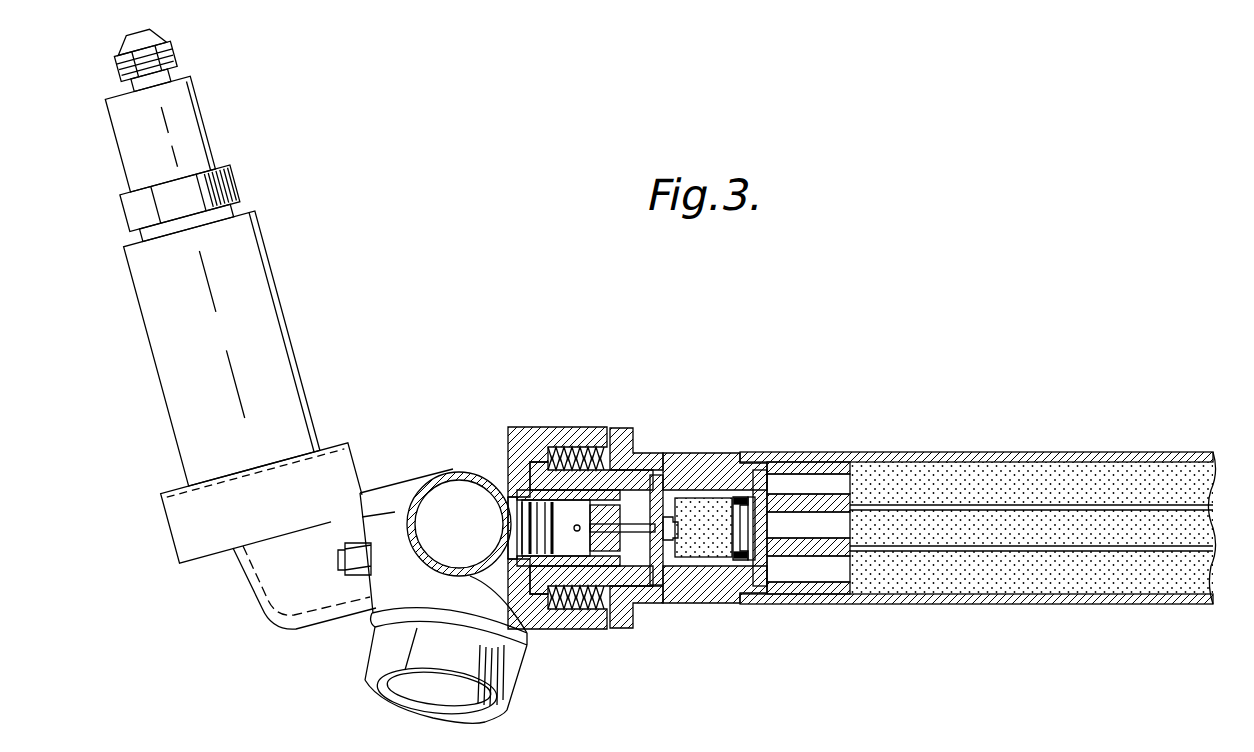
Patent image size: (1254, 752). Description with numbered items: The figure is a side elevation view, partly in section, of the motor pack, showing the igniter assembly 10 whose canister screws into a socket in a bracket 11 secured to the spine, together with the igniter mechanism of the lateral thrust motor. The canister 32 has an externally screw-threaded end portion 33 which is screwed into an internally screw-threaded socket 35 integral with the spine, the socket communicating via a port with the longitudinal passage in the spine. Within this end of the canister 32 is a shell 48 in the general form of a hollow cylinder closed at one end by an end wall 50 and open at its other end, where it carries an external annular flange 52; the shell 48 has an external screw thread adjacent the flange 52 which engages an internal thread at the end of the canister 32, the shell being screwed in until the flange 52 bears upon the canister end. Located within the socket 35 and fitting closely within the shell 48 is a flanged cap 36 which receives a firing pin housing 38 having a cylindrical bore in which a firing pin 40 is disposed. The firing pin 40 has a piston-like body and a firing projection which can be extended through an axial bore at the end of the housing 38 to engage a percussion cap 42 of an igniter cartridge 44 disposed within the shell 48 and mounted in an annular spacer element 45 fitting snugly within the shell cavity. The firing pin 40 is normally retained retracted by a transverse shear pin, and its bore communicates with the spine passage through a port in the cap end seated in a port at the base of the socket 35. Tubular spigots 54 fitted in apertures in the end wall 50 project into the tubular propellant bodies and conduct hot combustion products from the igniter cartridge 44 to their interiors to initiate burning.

The igniter assembly 10 is at (284, 281).
The bracket 11 is at (347, 452).
The canister 32 is at (1000, 455).
The externally screw-threaded end portion 33 is at (582, 447).
The internally screw-threaded socket 35 is at (560, 445).
The flanged cap 36 is at (643, 468).
The firing pin housing 38 is at (675, 463).
The firing pin 40 is at (558, 542).
The percussion cap 42 is at (658, 587).
The igniter cartridge 44 is at (719, 562).
The annular spacer element 45 is at (750, 566).
The shell 48 is at (857, 428).
The end wall 50 is at (937, 427).
The annular flange 52 is at (505, 426).
The tubular spigots 54 is at (852, 512).